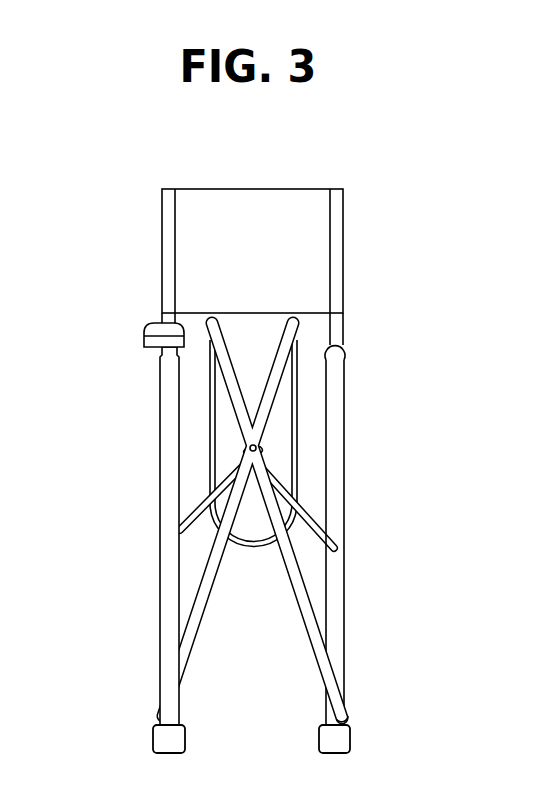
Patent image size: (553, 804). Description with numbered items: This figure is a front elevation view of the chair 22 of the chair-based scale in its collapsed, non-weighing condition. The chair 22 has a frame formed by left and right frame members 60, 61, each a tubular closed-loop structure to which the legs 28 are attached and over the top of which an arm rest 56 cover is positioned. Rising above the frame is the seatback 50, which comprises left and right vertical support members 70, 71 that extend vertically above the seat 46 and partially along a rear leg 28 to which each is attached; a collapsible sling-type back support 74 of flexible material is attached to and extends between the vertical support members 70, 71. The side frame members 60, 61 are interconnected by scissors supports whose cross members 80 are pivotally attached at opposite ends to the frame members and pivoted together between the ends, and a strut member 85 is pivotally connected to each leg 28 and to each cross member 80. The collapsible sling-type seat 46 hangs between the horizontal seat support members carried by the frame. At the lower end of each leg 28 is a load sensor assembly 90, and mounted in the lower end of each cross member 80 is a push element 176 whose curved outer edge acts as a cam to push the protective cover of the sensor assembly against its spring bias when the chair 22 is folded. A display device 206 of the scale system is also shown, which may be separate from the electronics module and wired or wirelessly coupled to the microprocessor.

The chair 22 is at (453, 429).
The leg 28 is at (160, 580).
The seat 46 is at (297, 452).
The seatback 50 is at (349, 272).
The arm rest 56 is at (346, 352).
The left frame member 60 is at (141, 441).
The right frame member 61 is at (371, 418).
The left vertical support member 70 is at (163, 321).
The right vertical support member 71 is at (340, 322).
The back support 74 is at (240, 207).
The cross member 80 is at (212, 568).
The strut member 85 is at (311, 514).
The assembly 90 is at (355, 741).
The push element 176 is at (349, 718).
The display device 206 is at (144, 329).